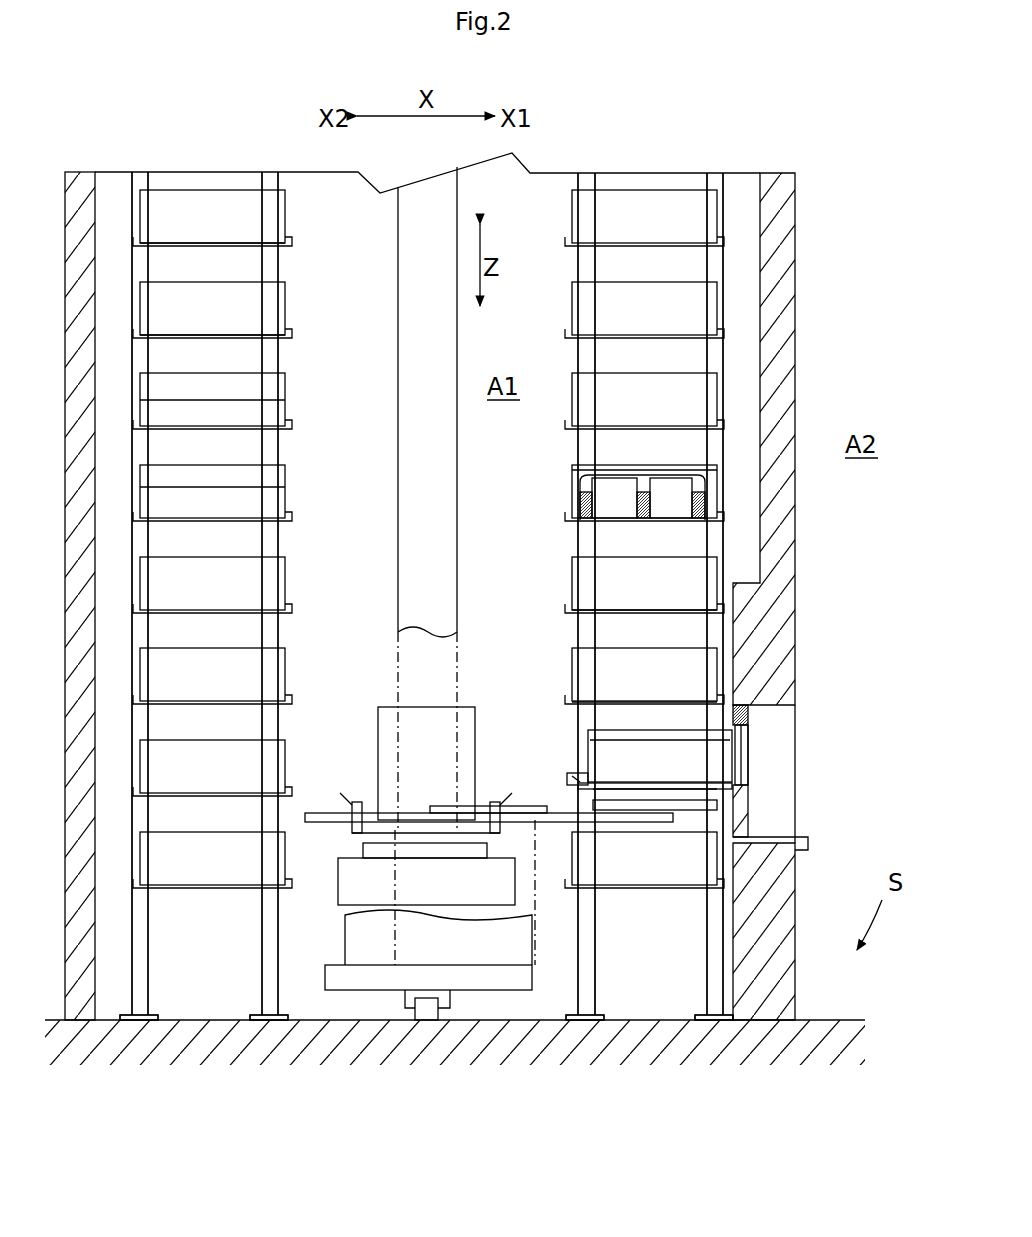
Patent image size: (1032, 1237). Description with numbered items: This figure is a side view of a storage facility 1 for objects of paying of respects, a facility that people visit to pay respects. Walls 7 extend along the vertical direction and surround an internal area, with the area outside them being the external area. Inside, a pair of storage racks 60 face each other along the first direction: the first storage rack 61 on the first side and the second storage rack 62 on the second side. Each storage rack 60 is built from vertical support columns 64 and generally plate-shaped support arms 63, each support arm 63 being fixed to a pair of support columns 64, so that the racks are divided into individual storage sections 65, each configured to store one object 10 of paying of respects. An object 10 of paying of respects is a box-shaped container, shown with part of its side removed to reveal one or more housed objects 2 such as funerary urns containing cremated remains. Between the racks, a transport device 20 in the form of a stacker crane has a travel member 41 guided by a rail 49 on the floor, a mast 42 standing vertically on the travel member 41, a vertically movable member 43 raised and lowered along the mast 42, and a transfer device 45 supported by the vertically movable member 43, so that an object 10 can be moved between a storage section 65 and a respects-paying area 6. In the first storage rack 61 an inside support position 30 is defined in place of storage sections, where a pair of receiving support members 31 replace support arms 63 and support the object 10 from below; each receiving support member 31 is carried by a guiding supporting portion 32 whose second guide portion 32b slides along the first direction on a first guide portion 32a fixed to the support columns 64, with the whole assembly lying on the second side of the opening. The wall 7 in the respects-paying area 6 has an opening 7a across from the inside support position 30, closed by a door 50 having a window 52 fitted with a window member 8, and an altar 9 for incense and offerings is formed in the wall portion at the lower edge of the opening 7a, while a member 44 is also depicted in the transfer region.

The storage facility 1 is at (473, 570).
The housed object 2 is at (675, 490).
The respects-paying area 6 is at (807, 749).
The wall 7 is at (785, 310).
The opening 7a is at (745, 720).
The window member 8 is at (748, 765).
The altar 9 is at (800, 848).
The object of paying of respects 10 is at (265, 487).
The transport device 20 is at (466, 595).
The inside support position 30 is at (626, 816).
The receiving support member 31 is at (688, 790).
The guiding supporting portion 32 is at (649, 869).
The first guide portion 32a is at (640, 790).
The second guide portion 32b is at (677, 790).
The travel member 41 is at (330, 982).
The mast 42 is at (420, 318).
The vertically movable member 43 is at (368, 895).
The arm plate 44 is at (612, 805).
The transfer device 45 is at (530, 790).
The rail 49 is at (425, 1012).
The door 50 is at (745, 815).
The window 52 is at (755, 770).
The storage rack 60 is at (419, 547).
The first storage rack 61 is at (620, 160).
The second storage rack 62 is at (197, 160).
The support arm 63 is at (210, 420).
The support column 64 is at (270, 898).
The storage section 65 is at (265, 305).